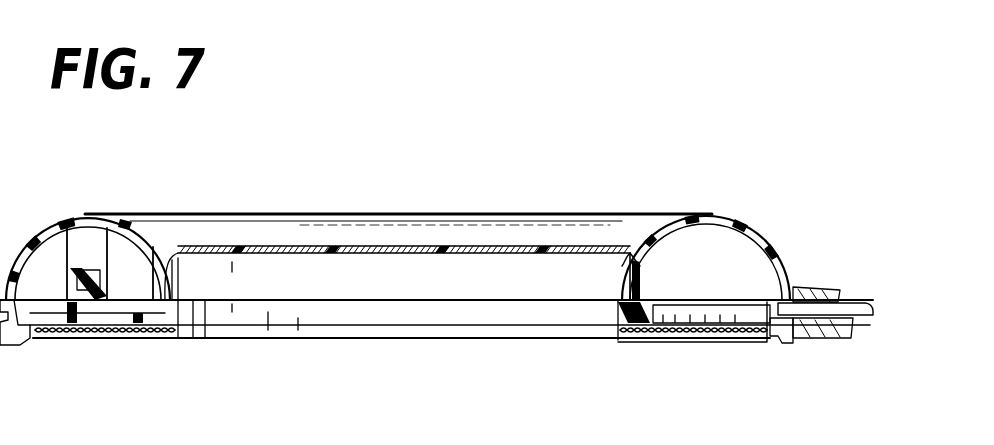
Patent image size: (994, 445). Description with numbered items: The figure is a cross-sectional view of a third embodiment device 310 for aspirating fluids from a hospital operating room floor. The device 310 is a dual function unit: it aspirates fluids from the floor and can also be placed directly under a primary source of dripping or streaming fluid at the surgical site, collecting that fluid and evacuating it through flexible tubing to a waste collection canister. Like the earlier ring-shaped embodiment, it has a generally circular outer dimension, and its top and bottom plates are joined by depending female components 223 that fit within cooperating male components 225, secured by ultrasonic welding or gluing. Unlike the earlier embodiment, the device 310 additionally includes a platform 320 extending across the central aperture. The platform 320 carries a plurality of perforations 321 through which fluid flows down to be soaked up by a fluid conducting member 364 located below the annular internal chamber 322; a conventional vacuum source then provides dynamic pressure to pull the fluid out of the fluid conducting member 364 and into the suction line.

The third embodiment device 310 is at (305, 214).
The depending female components 223 is at (87, 232).
The male components 225 is at (82, 313).
The platform 320 is at (495, 247).
The perforations 321 is at (320, 248).
The annular internal chamber 322 is at (748, 278).
The fluid conducting member 364 is at (705, 334).